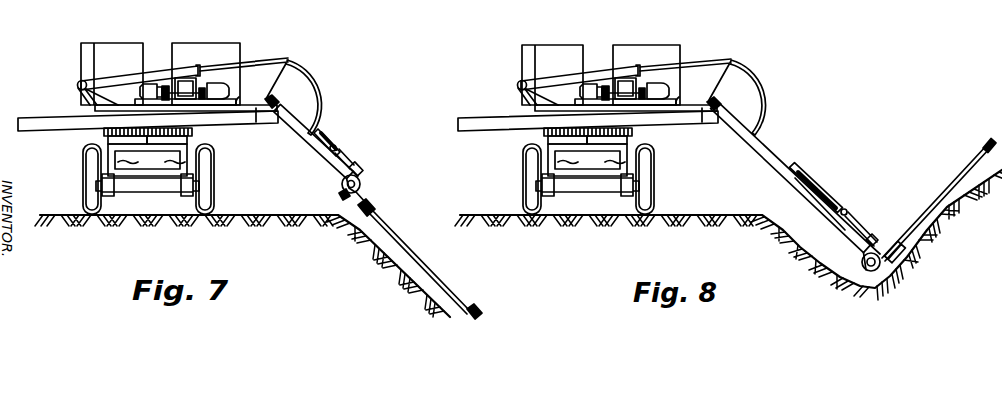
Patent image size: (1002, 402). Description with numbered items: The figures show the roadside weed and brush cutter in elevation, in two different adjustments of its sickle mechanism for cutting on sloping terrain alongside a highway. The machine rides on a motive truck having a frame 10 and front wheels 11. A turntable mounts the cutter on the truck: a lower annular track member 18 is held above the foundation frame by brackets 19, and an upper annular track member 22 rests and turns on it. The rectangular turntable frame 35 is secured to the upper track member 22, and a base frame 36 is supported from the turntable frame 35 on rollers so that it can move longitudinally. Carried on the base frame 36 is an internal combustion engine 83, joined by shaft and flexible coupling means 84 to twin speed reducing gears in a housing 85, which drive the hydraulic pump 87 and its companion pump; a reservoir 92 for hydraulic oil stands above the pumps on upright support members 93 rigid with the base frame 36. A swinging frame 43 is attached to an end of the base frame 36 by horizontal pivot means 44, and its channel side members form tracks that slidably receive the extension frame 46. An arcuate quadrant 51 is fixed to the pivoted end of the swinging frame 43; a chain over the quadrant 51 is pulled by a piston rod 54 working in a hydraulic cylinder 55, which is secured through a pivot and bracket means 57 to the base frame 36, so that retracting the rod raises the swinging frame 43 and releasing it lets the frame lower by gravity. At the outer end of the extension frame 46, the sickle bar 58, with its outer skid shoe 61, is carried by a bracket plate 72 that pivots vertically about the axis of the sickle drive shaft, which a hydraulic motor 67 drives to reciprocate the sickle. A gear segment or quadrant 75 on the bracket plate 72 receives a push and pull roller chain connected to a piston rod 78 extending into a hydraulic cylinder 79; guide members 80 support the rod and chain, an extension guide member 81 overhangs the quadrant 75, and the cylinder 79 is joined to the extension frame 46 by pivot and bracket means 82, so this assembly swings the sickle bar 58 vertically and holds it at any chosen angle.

In FIG. 7, the frame 10 is at (147, 170).
In FIG. 8, the frame 10 is at (587, 170).
In FIG. 7, the front wheels 11 is at (88, 190).
In FIG. 8, the front wheels 11 is at (586, 179).
In FIG. 7, the lower annular track member 18 is at (105, 133).
In FIG. 8, the lower annular track member 18 is at (543, 146).
In FIG. 7, the brackets 19 is at (190, 137).
In FIG. 8, the brackets 19 is at (626, 143).
In FIG. 7, the upper annular track member 22 is at (158, 129).
In FIG. 8, the upper annular track member 22 is at (605, 129).
In FIG. 7, the turntable frame 35 is at (39, 125).
In FIG. 8, the turntable frame 35 is at (588, 132).
In FIG. 7, the base frame 36 is at (260, 122).
In FIG. 8, the base frame 36 is at (626, 122).
In FIG. 7, the swinging frame 43 is at (311, 148).
In FIG. 8, the swinging frame 43 is at (758, 148).
In FIG. 7, the horizontal pivot means 44 is at (278, 103).
In FIG. 8, the horizontal pivot means 44 is at (719, 102).
In FIG. 7, the extension frame 46 is at (340, 184).
In FIG. 8, the extension frame 46 is at (805, 193).
In FIG. 7, the arcuate quadrant 51 is at (307, 91).
In FIG. 8, the arcuate quadrant 51 is at (757, 111).
In FIG. 7, the piston rod 54 is at (259, 64).
In FIG. 8, the piston rod 54 is at (695, 64).
In FIG. 7, the hydraulic cylinder 55 is at (119, 80).
In FIG. 8, the hydraulic cylinder 55 is at (580, 58).
In FIG. 7, the bracket means 57 is at (84, 92).
In FIG. 8, the bracket means 57 is at (520, 95).
In FIG. 7, the sickle bar 58 is at (437, 278).
In FIG. 8, the sickle bar 58 is at (951, 201).
In FIG. 7, the outer skid shoe 61 is at (481, 311).
In FIG. 8, the outer skid shoe 61 is at (991, 150).
In FIG. 7, the hydraulic motor 67 is at (340, 195).
In FIG. 8, the hydraulic motor 67 is at (881, 286).
In FIG. 7, the bracket plate 72 is at (377, 210).
In FIG. 8, the bracket plate 72 is at (901, 237).
In FIG. 7, the gear segment or quadrant 75 is at (362, 186).
In FIG. 7, the piston rod 78 is at (336, 151).
In FIG. 8, the piston rod 78 is at (848, 211).
In FIG. 7, the hydraulic cylinder 79 is at (324, 138).
In FIG. 8, the hydraulic cylinder 79 is at (818, 196).
In FIG. 7, the guide members 80 is at (352, 164).
In FIG. 8, the guide members 80 is at (857, 231).
In FIG. 7, the extension guide member 81 is at (364, 176).
In FIG. 8, the pivot and bracket means 82 is at (797, 168).
In FIG. 7, the internal combustion engine 83 is at (93, 56).
In FIG. 8, the internal combustion engine 83 is at (533, 75).
In FIG. 7, the shaft and flexible coupling means 84 is at (166, 90).
In FIG. 8, the shaft and flexible coupling means 84 is at (625, 94).
In FIG. 7, the housing 85 is at (185, 86).
In FIG. 8, the housing 85 is at (627, 75).
In FIG. 7, the hydraulic pump 87 is at (226, 88).
In FIG. 8, the hydraulic pump 87 is at (658, 75).
In FIG. 7, the reservoir or tank 92 is at (214, 56).
In FIG. 8, the reservoir or tank 92 is at (646, 62).
In FIG. 7, the upright support members 93 is at (238, 104).
In FIG. 8, the upright support members 93 is at (691, 93).